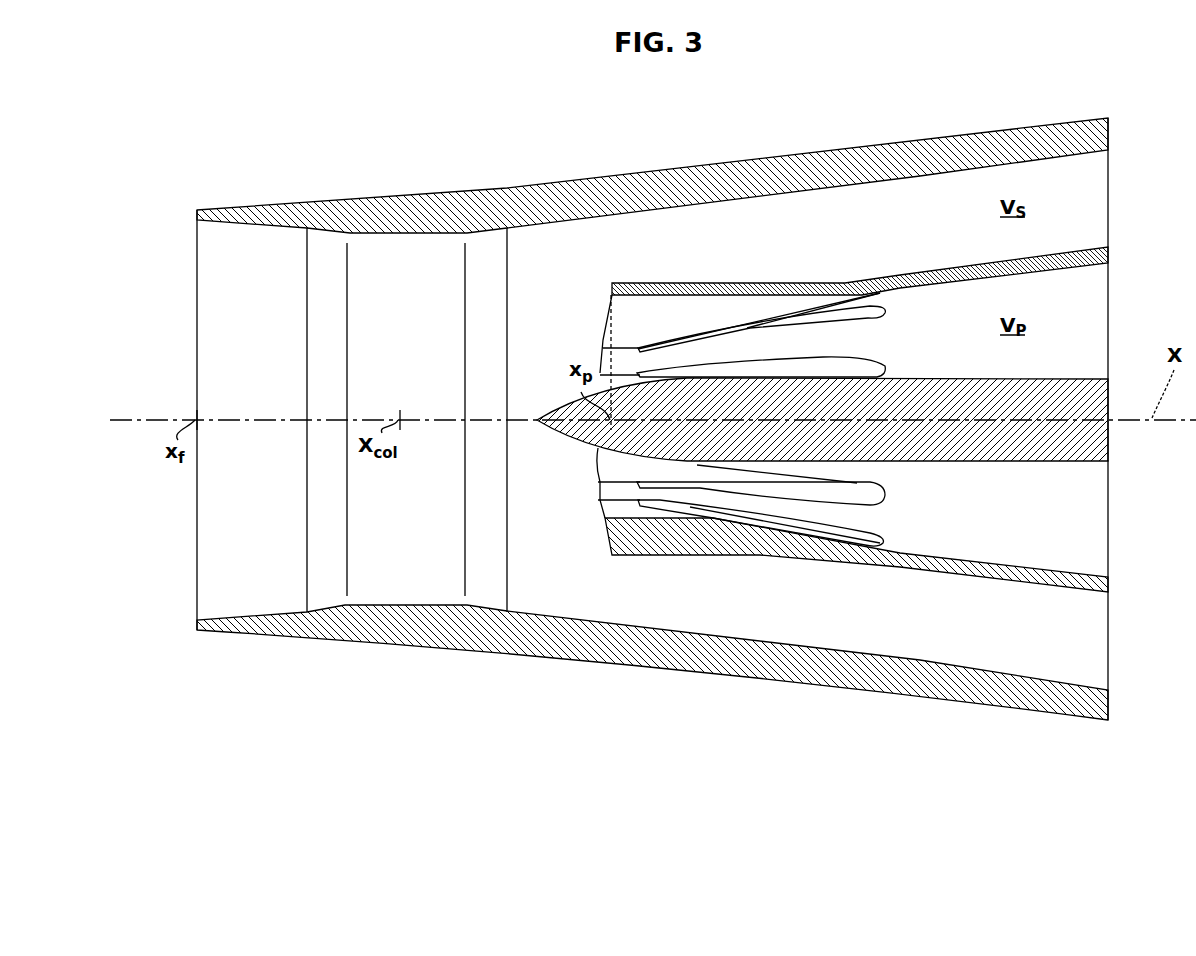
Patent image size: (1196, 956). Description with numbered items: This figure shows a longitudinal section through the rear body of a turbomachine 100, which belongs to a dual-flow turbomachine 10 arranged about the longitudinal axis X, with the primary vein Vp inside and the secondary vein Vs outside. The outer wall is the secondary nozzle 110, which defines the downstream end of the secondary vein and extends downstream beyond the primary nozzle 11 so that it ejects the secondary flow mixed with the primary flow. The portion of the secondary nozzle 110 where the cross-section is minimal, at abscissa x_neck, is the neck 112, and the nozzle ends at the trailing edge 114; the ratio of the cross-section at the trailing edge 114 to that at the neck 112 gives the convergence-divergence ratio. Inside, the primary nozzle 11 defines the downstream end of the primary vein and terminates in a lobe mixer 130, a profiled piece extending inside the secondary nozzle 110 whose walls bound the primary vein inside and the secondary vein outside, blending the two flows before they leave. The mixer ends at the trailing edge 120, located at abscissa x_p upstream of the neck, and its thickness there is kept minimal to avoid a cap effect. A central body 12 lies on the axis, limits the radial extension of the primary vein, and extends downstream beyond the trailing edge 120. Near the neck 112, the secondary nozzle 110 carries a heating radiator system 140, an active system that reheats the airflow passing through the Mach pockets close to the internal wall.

The dual-flow turbomachine 10 is at (613, 402).
The rear body of turbomachine 100 is at (613, 390).
The secondary nozzle 110 is at (555, 203).
The neck of the secondary nozzle 112 is at (400, 600).
The trailing edge of the secondary nozzle 114 is at (194, 211).
The primary nozzle 11 is at (407, 420).
The heating radiator system 140 is at (419, 383).
The trailing edge of the primary nozzle 120 is at (608, 289).
The central body 12 is at (953, 444).
The lobe mixer 130 is at (697, 548).